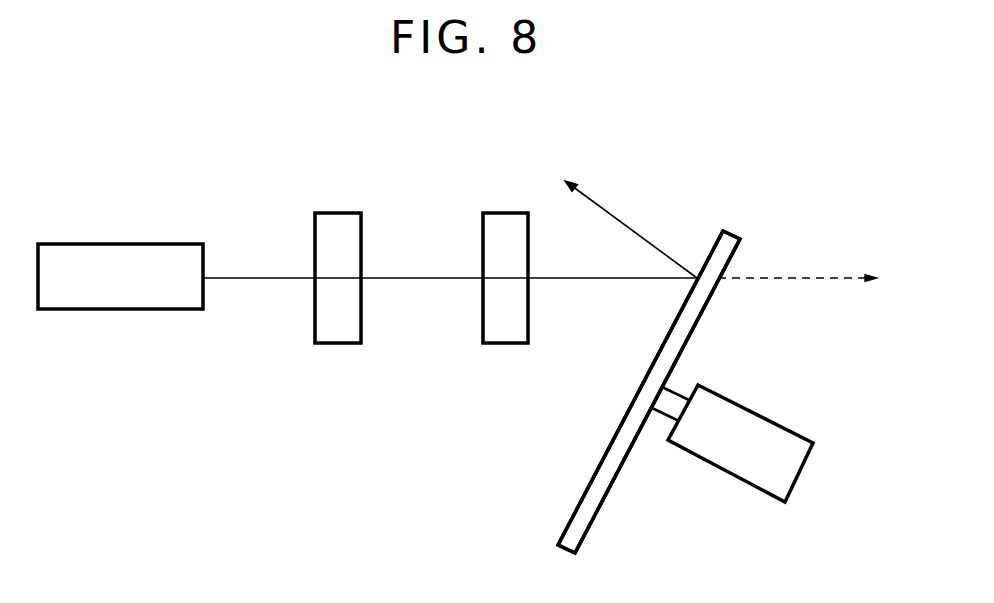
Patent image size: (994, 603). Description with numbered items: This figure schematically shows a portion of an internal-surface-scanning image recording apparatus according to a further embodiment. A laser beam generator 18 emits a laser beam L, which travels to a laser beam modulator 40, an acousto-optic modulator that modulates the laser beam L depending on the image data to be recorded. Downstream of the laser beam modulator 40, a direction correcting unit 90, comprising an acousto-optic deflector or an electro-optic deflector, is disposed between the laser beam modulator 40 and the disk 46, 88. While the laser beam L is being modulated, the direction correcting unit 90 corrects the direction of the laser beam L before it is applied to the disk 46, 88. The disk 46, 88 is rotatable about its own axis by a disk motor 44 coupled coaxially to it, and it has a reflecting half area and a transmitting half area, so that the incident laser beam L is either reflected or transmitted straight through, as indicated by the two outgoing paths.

The laser beam generator 18 is at (127, 262).
The laser beam modulator 40 is at (338, 227).
The direction correcting unit 90 is at (505, 227).
The disk 46 is at (590, 508).
The disk 88 is at (649, 392).
The disk motor 44 is at (747, 423).
The laser beam L is at (608, 210).